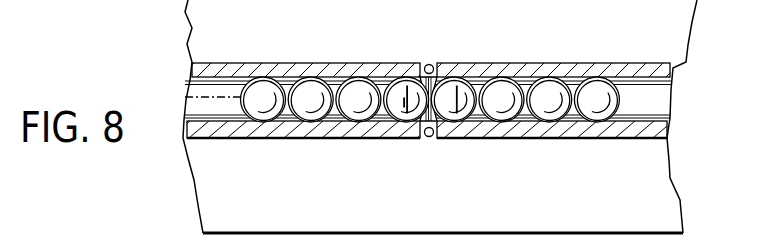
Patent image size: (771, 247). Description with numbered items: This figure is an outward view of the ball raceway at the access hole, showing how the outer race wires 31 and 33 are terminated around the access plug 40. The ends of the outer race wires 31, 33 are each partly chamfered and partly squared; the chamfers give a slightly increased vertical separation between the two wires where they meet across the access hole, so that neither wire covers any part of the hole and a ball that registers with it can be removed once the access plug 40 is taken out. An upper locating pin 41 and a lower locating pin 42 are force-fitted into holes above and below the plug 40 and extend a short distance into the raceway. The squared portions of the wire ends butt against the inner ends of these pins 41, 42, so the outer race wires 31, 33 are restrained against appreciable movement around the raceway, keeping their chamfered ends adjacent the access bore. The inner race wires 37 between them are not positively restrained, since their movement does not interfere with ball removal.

The outer race wire 31 is at (577, 70).
The outer race wire 33 is at (570, 132).
The ball raceway 37 is at (653, 105).
The access plug 40 is at (422, 77).
The upper locating pin 41 is at (431, 64).
The lower locating pin 42 is at (430, 137).